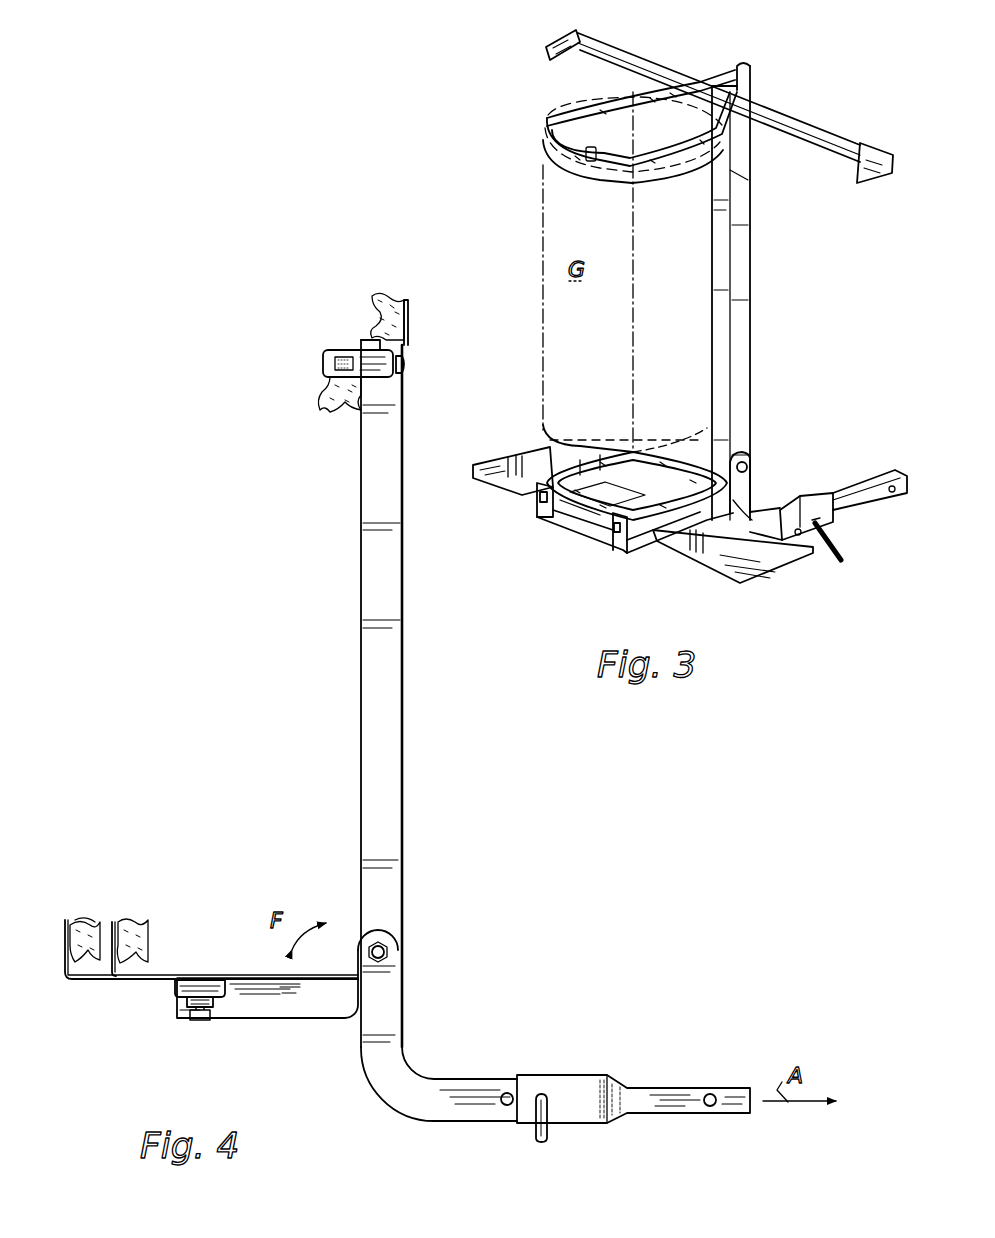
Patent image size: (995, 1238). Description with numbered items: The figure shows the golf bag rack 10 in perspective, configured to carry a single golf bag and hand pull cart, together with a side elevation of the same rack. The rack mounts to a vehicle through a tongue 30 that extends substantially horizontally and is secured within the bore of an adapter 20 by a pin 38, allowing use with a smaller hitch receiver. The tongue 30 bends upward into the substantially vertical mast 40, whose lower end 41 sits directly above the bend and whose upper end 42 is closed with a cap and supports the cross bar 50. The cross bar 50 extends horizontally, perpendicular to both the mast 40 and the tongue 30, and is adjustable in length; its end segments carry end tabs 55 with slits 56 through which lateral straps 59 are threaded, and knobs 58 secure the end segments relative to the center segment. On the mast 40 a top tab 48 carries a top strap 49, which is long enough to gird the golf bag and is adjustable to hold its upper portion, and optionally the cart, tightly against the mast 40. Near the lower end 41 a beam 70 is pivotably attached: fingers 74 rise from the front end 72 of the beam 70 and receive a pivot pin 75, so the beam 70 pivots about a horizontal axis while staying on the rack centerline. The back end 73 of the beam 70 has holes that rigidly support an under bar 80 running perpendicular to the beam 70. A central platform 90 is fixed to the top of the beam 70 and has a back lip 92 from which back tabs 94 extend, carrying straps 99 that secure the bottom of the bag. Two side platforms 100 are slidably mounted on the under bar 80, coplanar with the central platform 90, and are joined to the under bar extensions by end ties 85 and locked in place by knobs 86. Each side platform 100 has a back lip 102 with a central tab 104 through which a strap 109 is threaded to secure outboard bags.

In FIG. 3, the golf bag rack 10 is at (505, 86).
In FIG. 4, the golf bag rack 10 is at (252, 552).
In FIG. 3, the adapter 20 is at (865, 483).
In FIG. 4, the adapter 20 is at (603, 1093).
In FIG. 3, the tongue 30 is at (768, 523).
In FIG. 4, the tongue 30 is at (460, 1092).
In FIG. 4, the pin 38 is at (545, 1128).
In FIG. 3, the mast 40 is at (748, 306).
In FIG. 4, the mast 40 is at (386, 695).
In FIG. 4, the lower end of mast 41 is at (388, 1044).
In FIG. 4, the upper end of mast 42 is at (389, 411).
In FIG. 3, the top tab 48 is at (642, 118).
In FIG. 4, the top tab 48 is at (409, 331).
In FIG. 4, the top strap 49 is at (380, 305).
In FIG. 3, the cross bar 50 is at (790, 118).
In FIG. 4, the end tab 55 is at (362, 357).
In FIG. 4, the slit 56 is at (336, 360).
In FIG. 4, the knob 58 is at (407, 367).
In FIG. 4, the lateral strap 59 is at (330, 391).
In FIG. 3, the beam 70 is at (746, 480).
In FIG. 4, the beam 70 is at (342, 1013).
In FIG. 4, the front end of beam 72 is at (381, 998).
In FIG. 4, the back end of beam 73 is at (185, 1015).
In FIG. 4, the fingers 74 is at (391, 962).
In FIG. 4, the pivot pin 75 is at (384, 950).
In FIG. 4, the under bar 80 is at (190, 1002).
In FIG. 4, the end tie 85 is at (200, 985).
In FIG. 4, the knob 86 is at (200, 1021).
In FIG. 3, the central platform 90 is at (608, 508).
In FIG. 4, the central platform 90 is at (78, 979).
In FIG. 4, the back lip 92 is at (65, 957).
In FIG. 4, the back tab 94 is at (67, 932).
In FIG. 4, the strap 99 is at (82, 920).
In FIG. 3, the side platform 100 is at (528, 465).
In FIG. 4, the side platform 100 is at (267, 984).
In FIG. 4, the back lip 102 is at (109, 972).
In FIG. 4, the central tab 104 is at (113, 923).
In FIG. 4, the strap 109 is at (143, 931).